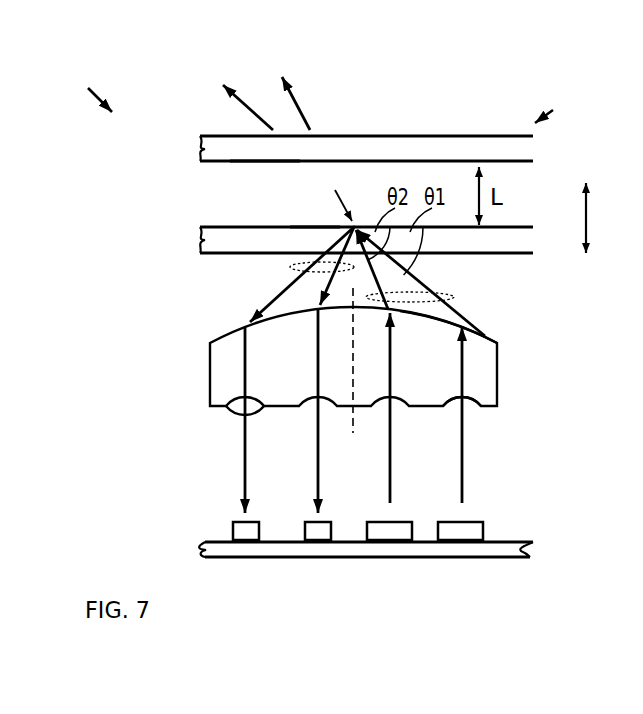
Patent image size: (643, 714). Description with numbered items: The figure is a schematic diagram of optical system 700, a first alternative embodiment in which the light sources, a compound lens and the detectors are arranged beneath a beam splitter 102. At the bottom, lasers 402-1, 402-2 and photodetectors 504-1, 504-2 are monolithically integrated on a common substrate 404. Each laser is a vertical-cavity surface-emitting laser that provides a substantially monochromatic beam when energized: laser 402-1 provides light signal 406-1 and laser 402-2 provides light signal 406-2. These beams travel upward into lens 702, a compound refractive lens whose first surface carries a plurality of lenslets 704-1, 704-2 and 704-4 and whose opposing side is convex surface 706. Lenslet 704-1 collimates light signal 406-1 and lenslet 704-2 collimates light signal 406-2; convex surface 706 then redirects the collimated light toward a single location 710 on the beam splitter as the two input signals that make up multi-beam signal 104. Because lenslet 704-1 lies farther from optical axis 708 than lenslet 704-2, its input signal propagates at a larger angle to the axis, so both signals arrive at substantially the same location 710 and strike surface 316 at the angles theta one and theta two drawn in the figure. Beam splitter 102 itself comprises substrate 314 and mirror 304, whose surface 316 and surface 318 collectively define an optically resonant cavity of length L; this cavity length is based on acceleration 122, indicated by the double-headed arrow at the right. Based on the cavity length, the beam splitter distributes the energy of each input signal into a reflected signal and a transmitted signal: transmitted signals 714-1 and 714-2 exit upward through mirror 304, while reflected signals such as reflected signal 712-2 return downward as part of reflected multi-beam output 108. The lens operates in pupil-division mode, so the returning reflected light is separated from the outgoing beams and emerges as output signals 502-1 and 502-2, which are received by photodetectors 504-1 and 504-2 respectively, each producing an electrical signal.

The optical system 700 is at (83, 87).
The beam splitter 102 is at (561, 102).
The mirror 304 is at (207, 152).
The surface of mirror 318 is at (245, 163).
The transmitted signal 714-1 is at (303, 113).
The transmitted signal 714-2 is at (258, 121).
The substrate 314 is at (210, 247).
The surface of substrate 316 is at (320, 226).
The location 710 is at (333, 196).
The acceleration 122 is at (597, 218).
The reflected multi-beam output 108 is at (290, 267).
The multi-beam signal 104 is at (455, 298).
The reflected signal 712-2 is at (255, 308).
The convex surface 706 is at (437, 322).
The lens 702 is at (497, 370).
The lenslet 704-2 is at (455, 320).
The lenslet 704-4 is at (245, 412).
The lenslet 704-1 is at (462, 412).
The optical axis 708 is at (353, 358).
The output signal 502-2 is at (247, 451).
The output signal 502-1 is at (320, 451).
The light signal 406-1 is at (392, 451).
The light signal 406-2 is at (464, 451).
The substrate 404 is at (535, 545).
The photodetector 504-2 is at (247, 540).
The photodetector 504-1 is at (320, 540).
The laser 402-1 is at (390, 540).
The laser 402-2 is at (462, 540).